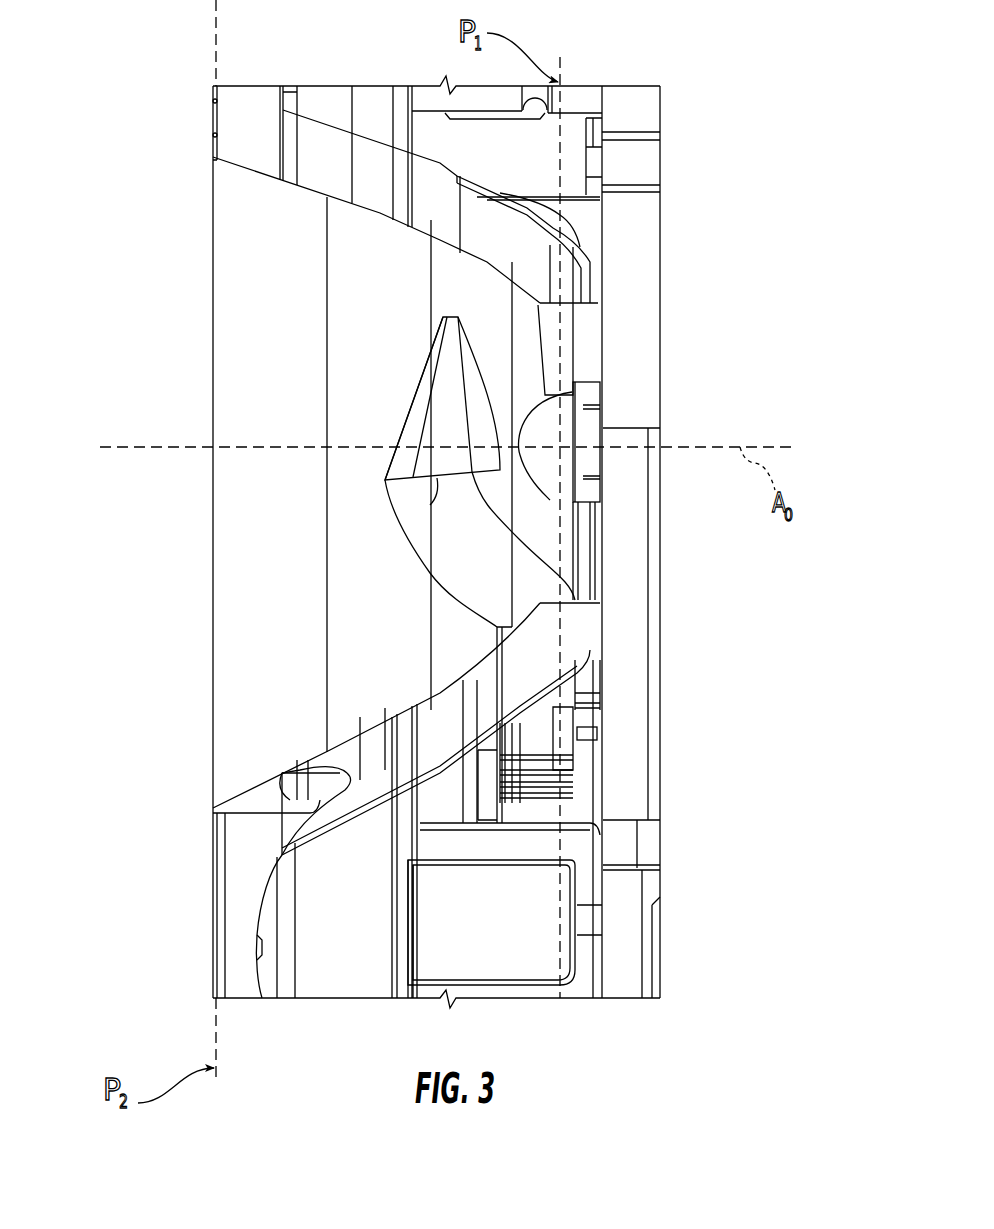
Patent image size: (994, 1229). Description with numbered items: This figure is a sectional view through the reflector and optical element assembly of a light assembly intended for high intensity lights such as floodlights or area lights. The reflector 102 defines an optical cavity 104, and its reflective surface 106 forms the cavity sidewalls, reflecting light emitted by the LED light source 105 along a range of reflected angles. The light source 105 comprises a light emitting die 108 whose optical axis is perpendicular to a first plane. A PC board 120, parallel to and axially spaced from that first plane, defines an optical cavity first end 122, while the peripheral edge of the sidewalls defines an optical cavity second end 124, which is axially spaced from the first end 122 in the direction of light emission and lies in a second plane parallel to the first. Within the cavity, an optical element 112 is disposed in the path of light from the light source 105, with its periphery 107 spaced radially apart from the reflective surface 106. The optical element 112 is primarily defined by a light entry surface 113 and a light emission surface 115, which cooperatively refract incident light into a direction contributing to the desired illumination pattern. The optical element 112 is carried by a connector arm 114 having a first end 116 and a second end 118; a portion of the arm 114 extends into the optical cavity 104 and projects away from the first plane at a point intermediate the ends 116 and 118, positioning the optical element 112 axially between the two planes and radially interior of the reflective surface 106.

The reflector 102 is at (560, 230).
The optical cavity 104 is at (255, 330).
The LED light source 105 is at (582, 372).
The reflective surface 106 is at (448, 250).
The periphery 107 is at (447, 317).
The light emitting die 108 is at (550, 462).
The optical element 112 is at (415, 403).
The light entry surface 113 is at (483, 367).
The connector arm 114 is at (487, 508).
The light emission surface 115 is at (417, 360).
The first end 116 is at (376, 497).
The second end 118 is at (582, 862).
The PC board 120 is at (212, 157).
The optical cavity first end 122 is at (568, 562).
The optical cavity second end 124 is at (213, 702).